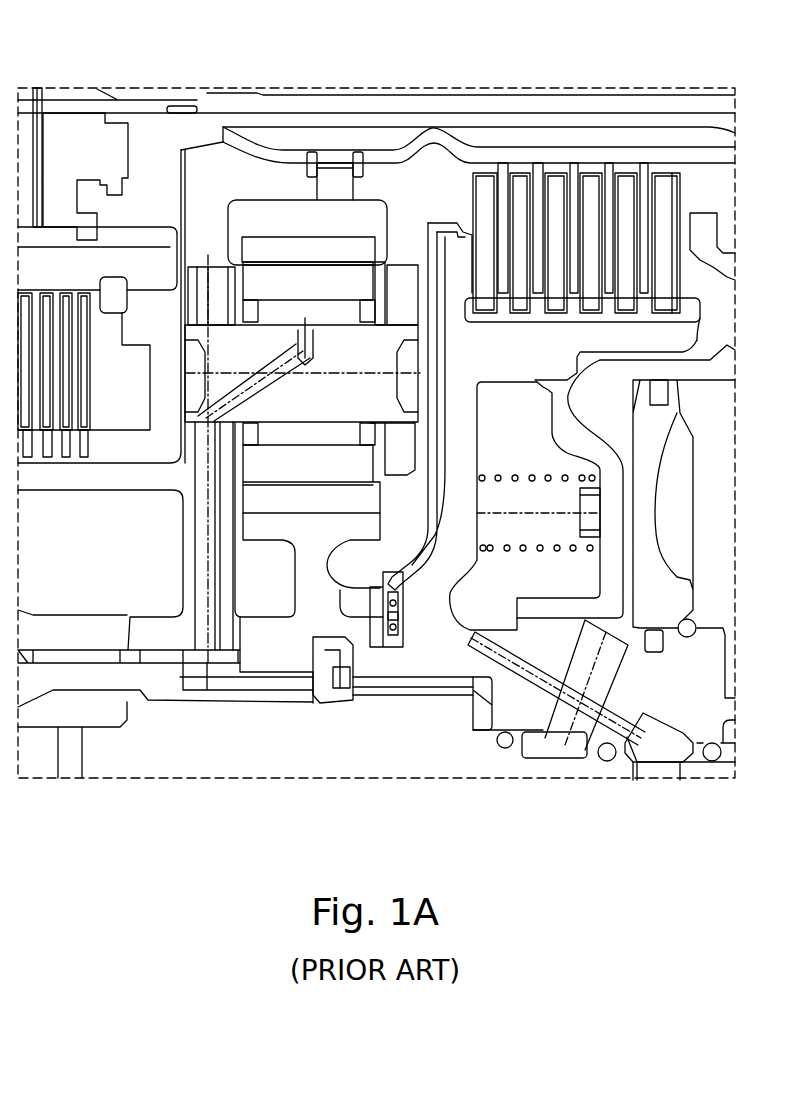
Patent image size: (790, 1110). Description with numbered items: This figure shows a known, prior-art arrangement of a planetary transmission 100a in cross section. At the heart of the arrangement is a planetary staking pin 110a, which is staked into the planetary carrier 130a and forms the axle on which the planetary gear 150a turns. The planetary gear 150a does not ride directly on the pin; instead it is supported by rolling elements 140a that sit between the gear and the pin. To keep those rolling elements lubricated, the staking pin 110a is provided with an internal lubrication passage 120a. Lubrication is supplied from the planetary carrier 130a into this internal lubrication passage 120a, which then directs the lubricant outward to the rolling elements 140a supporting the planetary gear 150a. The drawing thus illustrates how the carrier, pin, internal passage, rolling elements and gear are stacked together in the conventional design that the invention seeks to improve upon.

The planetary transmission 100a is at (528, 85).
The planetary staking pin 110a is at (338, 342).
The internal lubrication passage 120a is at (296, 340).
The planetary carrier 130a is at (208, 267).
The rolling elements 140a is at (313, 433).
The planetary gear 150a is at (373, 273).